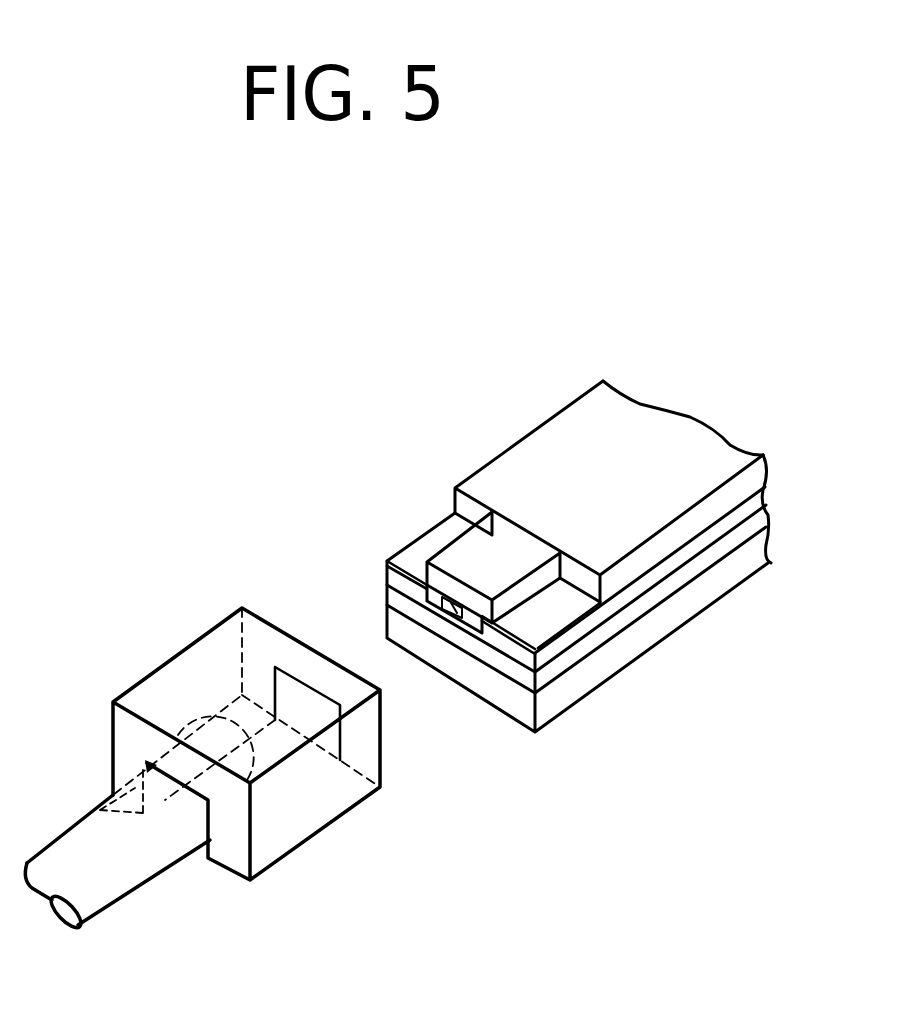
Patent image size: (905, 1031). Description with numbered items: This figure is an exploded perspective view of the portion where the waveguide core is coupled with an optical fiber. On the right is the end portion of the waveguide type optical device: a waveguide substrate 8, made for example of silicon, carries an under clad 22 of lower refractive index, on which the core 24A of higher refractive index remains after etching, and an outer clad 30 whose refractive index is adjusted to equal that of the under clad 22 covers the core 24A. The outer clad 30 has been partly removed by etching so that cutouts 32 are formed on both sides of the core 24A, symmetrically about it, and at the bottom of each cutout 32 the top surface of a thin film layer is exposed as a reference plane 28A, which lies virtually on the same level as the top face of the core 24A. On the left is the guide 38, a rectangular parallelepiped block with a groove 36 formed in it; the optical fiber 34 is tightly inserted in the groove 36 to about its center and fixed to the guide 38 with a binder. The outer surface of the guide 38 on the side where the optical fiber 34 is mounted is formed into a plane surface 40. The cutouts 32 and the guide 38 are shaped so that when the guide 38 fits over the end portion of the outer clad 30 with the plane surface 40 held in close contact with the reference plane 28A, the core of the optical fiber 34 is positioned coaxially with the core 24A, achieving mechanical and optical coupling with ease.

The waveguide substrate 8 is at (587, 677).
The under clad 22 is at (647, 602).
The core 24A is at (458, 606).
The reference plane 28A is at (531, 630).
The outer clad 30 is at (658, 430).
The cutout 32 is at (522, 587).
The optical fiber 34 is at (137, 868).
The groove 36 is at (165, 778).
The guide 38 is at (211, 627).
The plane surface 40 is at (233, 880).